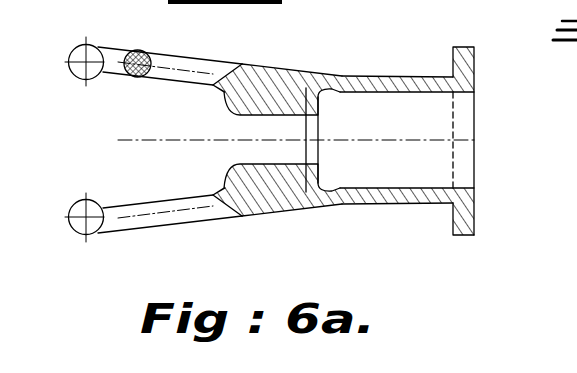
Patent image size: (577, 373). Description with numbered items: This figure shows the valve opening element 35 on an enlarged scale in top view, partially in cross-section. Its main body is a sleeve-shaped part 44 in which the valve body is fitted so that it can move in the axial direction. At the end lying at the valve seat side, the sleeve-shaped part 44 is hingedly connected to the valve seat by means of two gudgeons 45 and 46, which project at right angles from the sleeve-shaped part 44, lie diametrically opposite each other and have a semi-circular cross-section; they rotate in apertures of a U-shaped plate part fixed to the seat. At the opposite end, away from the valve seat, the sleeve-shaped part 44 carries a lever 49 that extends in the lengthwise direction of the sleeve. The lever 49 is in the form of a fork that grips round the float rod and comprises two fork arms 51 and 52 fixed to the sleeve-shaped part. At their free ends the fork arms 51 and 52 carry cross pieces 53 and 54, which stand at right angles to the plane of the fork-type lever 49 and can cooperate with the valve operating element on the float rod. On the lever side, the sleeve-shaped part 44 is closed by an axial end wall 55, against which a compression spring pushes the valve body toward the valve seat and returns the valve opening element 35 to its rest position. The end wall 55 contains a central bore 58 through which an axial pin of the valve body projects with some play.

The valve opening element 35 is at (298, 233).
The sleeve-shaped part 44 is at (373, 84).
The gudgeon 45 is at (467, 237).
The gudgeon 46 is at (461, 48).
The lever 49 is at (165, 144).
The fork arm 51 is at (177, 60).
The fork arm 52 is at (133, 222).
The cross piece 53 is at (82, 60).
The cross piece 54 is at (75, 231).
The axial end wall 55 is at (342, 76).
The central bore 58 is at (313, 150).